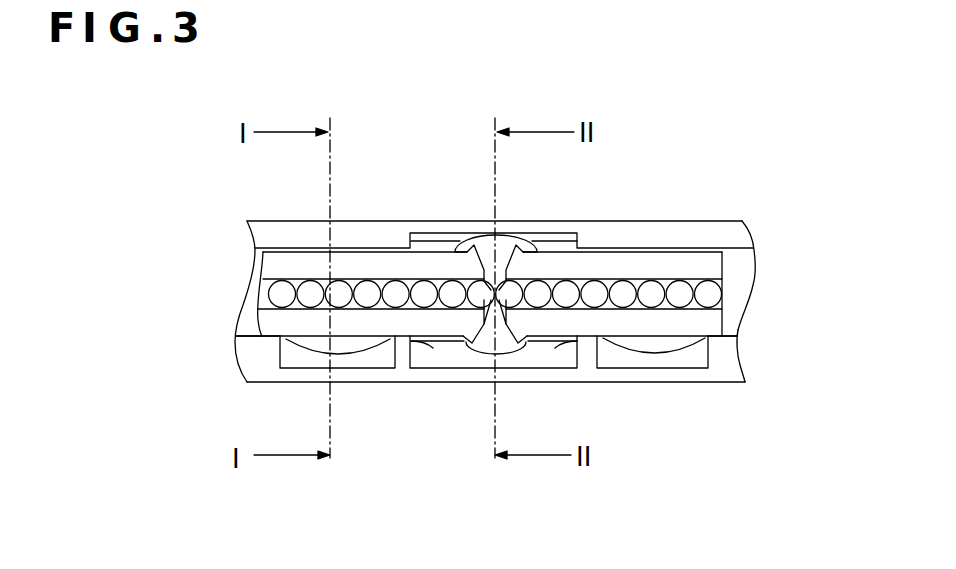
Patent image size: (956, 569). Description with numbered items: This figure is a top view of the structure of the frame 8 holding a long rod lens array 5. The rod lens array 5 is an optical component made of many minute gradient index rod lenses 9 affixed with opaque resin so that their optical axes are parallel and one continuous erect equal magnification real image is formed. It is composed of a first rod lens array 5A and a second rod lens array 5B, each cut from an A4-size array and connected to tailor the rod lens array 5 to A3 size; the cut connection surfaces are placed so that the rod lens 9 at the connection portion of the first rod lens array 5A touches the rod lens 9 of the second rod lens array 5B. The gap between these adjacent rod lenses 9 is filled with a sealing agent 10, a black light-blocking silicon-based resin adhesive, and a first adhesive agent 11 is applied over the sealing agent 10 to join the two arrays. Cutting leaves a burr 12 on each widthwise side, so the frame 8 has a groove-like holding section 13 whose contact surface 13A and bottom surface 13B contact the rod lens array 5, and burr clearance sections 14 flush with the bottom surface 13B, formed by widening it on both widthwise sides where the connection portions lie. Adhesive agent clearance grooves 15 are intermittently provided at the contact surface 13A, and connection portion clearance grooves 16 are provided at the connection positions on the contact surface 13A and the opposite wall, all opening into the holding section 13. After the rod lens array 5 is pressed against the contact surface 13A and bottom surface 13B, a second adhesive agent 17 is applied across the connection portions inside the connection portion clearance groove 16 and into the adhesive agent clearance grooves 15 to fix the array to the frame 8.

The rod lens array 5 is at (740, 337).
The first rod lens array 5A is at (275, 320).
The second rod lens array 5B is at (713, 323).
The frame 8 is at (715, 237).
The rod lens 9 is at (707, 295).
The sealing agent 10 is at (503, 243).
The first adhesive agent 11 is at (480, 246).
The burr 12 is at (457, 345).
The holding section 13 is at (733, 258).
The contact surface 13A is at (738, 328).
The bottom surface 13B is at (745, 267).
The burr clearance section 14 is at (552, 250).
The adhesive agent clearance groove 15 is at (363, 360).
The connection portion clearance groove 16 is at (422, 241).
The second adhesive agent 17 is at (315, 342).